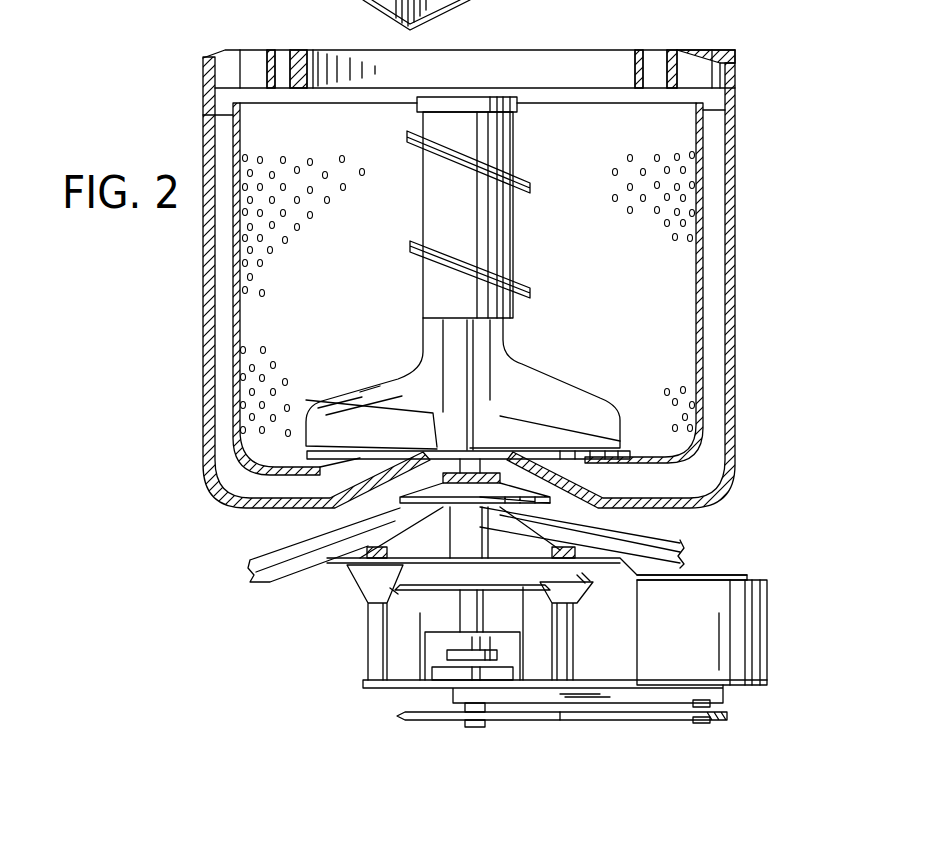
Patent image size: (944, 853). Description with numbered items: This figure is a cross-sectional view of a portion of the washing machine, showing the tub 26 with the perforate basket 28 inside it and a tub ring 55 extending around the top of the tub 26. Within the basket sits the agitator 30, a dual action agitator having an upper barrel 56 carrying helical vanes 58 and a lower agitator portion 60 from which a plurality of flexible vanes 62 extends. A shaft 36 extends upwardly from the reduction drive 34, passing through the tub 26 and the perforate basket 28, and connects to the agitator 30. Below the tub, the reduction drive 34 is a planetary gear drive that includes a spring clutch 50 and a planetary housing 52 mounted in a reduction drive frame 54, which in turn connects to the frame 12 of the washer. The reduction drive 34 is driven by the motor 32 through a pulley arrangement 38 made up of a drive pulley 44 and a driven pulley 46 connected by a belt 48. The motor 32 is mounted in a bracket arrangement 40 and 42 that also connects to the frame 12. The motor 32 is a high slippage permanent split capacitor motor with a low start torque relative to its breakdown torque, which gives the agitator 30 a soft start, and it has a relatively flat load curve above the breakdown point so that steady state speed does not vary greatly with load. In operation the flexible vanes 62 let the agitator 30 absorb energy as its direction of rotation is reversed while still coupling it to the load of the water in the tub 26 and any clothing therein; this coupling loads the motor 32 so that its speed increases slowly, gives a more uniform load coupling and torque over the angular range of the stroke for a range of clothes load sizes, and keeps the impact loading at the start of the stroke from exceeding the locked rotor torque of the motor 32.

The frame 12 is at (268, 580).
The tub 26 is at (731, 128).
The perforate basket 28 is at (704, 213).
The agitator 30 is at (512, 337).
The motor 32 is at (768, 623).
The reduction drive 34 is at (417, 643).
The shaft 36 is at (400, 510).
The pulley arrangement 38 is at (563, 723).
The bracket arrangement 40 is at (727, 575).
The bracket arrangement 42 is at (723, 695).
The drive pulley 44 is at (687, 720).
The driven pulley 46 is at (425, 723).
The belt 48 is at (616, 720).
The spring clutch 50 is at (500, 653).
The planetary housing 52 is at (420, 613).
The reduction drive frame 54 is at (367, 580).
The tub ring 55 is at (702, 52).
The upper barrel 56 is at (515, 243).
The helical vanes 58 is at (547, 172).
The lower agitator portion 60 is at (627, 457).
The flexible vanes 62 is at (590, 394).